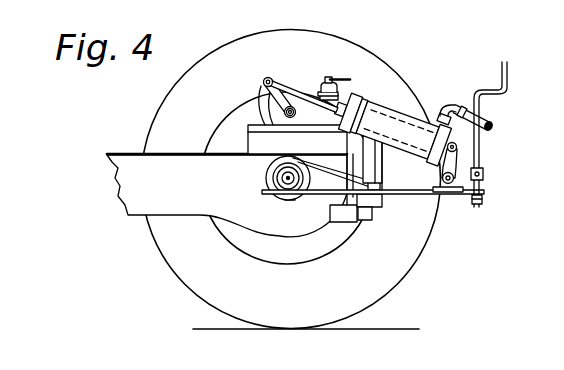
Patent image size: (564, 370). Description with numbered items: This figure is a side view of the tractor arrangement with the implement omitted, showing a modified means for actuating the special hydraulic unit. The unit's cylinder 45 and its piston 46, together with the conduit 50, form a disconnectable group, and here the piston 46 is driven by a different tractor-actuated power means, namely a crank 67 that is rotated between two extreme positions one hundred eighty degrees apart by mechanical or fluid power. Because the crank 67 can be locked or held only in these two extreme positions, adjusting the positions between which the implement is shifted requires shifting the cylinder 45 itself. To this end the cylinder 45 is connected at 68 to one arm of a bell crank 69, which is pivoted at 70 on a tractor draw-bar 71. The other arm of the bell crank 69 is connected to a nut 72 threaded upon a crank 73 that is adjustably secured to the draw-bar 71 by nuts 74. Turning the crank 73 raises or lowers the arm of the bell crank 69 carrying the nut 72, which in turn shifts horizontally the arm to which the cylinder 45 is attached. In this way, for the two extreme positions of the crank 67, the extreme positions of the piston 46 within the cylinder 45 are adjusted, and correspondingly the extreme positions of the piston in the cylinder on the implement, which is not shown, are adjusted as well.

The cylinder 45 is at (405, 112).
The piston 46 is at (373, 100).
The conduit 50 is at (491, 126).
The crank 67 is at (272, 80).
The connection point 68 is at (457, 146).
The bell crank 69 is at (445, 165).
The pivot 70 is at (449, 184).
The tractor draw-bar 71 is at (411, 196).
The nut 72 is at (484, 172).
The crank 73 is at (487, 94).
The nuts 74 is at (492, 196).